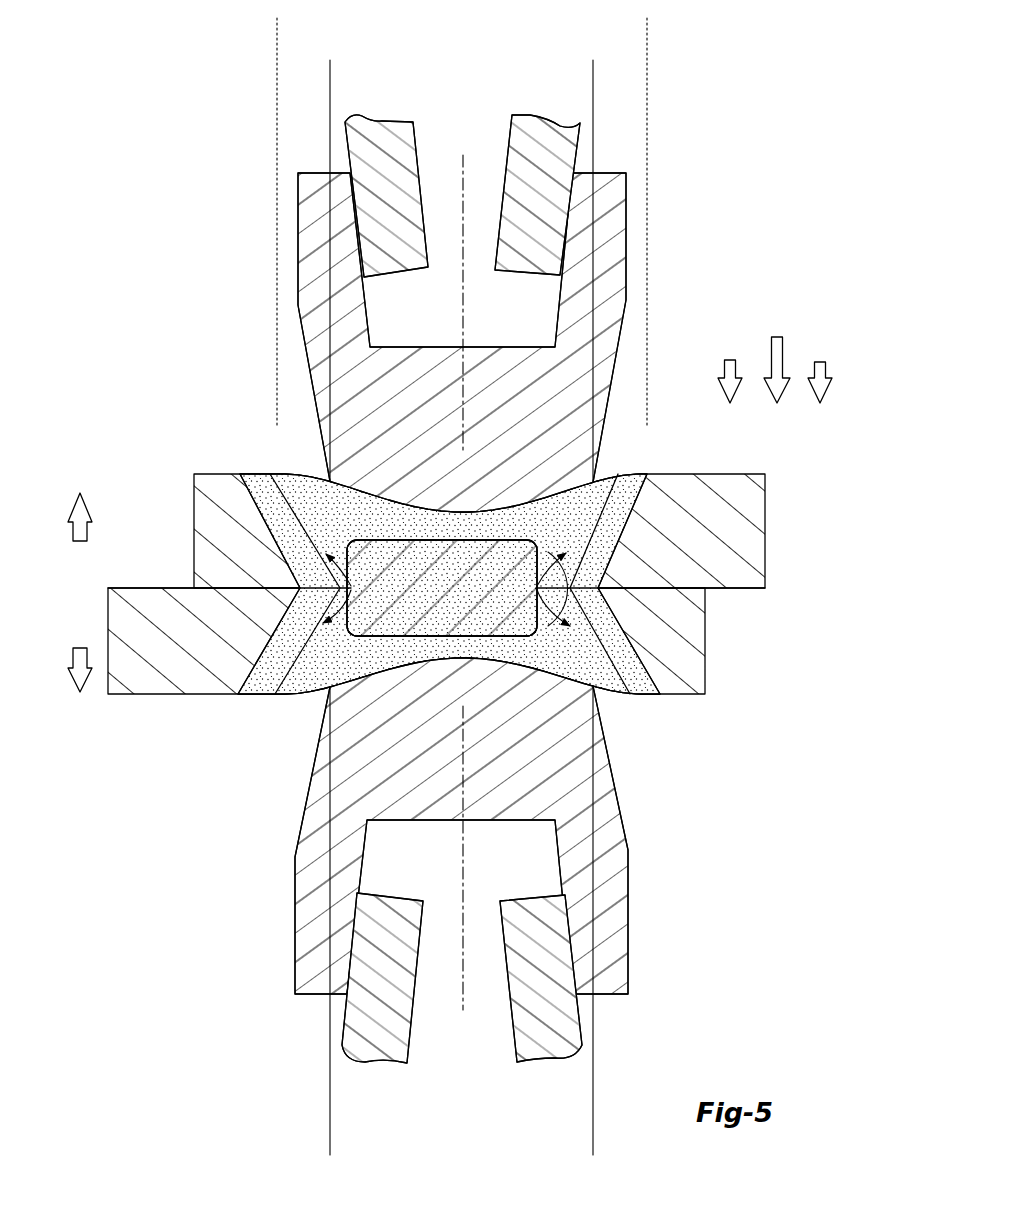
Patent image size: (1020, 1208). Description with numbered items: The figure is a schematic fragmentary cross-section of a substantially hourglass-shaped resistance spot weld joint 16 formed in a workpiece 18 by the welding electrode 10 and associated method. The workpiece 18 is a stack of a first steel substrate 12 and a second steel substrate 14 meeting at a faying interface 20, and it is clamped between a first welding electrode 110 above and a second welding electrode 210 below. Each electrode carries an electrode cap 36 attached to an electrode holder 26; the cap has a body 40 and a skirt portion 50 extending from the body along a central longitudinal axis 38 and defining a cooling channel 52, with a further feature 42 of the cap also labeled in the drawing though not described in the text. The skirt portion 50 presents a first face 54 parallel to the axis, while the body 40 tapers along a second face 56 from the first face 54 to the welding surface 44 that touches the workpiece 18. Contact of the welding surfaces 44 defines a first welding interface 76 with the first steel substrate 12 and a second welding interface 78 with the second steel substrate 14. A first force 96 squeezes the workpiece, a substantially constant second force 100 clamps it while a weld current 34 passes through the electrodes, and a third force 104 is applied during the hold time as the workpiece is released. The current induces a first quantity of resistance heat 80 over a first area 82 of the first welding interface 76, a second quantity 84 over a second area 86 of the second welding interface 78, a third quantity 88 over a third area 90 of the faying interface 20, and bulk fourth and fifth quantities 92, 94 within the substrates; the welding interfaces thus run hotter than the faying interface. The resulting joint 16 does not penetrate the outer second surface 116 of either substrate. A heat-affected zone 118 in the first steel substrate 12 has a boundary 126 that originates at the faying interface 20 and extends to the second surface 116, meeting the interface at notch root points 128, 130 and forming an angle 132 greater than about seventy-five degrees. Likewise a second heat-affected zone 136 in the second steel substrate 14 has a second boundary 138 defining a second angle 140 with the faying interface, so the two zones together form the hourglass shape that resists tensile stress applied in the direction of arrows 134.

The welding electrode 10 is at (380, 589).
The first welding electrode 110 is at (376, 248).
The second welding electrode 210 is at (208, 842).
The first steel substrate 12 is at (766, 492).
The second steel substrate 14 is at (108, 640).
The resistance spot weld joint 16 is at (447, 591).
The workpiece 18 is at (436, 583).
The faying interface 20 is at (350, 587).
The electrode holder 26 is at (413, 154).
The weld current 34 is at (474, 458).
The electrode cap 36 is at (263, 136).
The central longitudinal axis 38 is at (459, 285).
The body 40 is at (272, 412).
The die cavity 42 is at (483, 347).
The welding surface 44 is at (391, 503).
The skirt portion 50 is at (263, 251).
The cooling channel 52 is at (469, 155).
The first face 54 is at (626, 177).
The second face 56 is at (622, 341).
The first welding interface 76 is at (514, 504).
The second welding interface 78 is at (525, 668).
The first quantity of resistance heat 80 is at (598, 472).
The first area 82 is at (591, 83).
The second quantity of resistance heat 84 is at (603, 702).
The second area 86 is at (591, 1133).
The third quantity of resistance heat 88 is at (519, 597).
The third area 90 is at (645, 43).
The fourth quantity of resistance heat 92 is at (590, 509).
The fifth quantity of resistance heat 94 is at (334, 690).
The first force 96 is at (723, 366).
The second force 100 is at (770, 343).
The third force 104 is at (812, 368).
The second surface 116 is at (728, 472).
The heat-affected zone 118 is at (297, 482).
The boundary 126 is at (316, 542).
The notch root point 128 is at (335, 591).
The notch root point 130 is at (556, 591).
The angle 132 is at (351, 586).
The arrows 134 is at (80, 491).
The second heat-affected zone 136 is at (248, 693).
The second boundary 138 is at (283, 694).
The second angle 140 is at (333, 630).